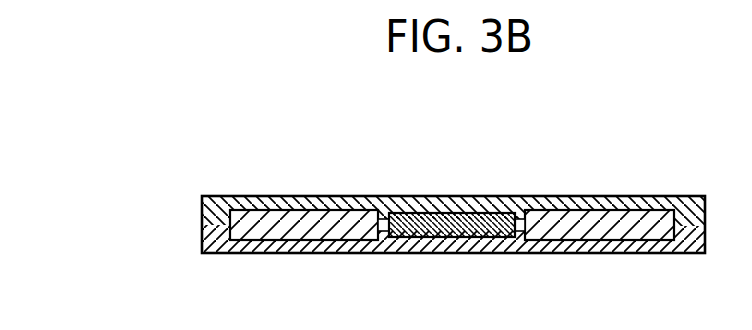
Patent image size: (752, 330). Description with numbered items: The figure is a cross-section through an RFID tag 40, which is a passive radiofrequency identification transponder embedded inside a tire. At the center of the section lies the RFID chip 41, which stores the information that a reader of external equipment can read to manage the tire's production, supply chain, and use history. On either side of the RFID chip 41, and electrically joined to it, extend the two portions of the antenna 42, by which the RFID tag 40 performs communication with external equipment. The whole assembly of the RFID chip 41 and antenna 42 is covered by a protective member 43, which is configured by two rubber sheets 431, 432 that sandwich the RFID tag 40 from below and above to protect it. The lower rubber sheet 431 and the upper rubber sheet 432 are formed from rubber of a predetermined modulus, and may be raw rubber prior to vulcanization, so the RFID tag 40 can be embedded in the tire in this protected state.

The RFID tag 40 is at (683, 142).
The RFID chip 41 is at (473, 222).
The antenna 42 is at (340, 228).
The protective member 43 is at (103, 182).
The rubber sheet 431 is at (205, 253).
The rubber sheet 432 is at (205, 206).